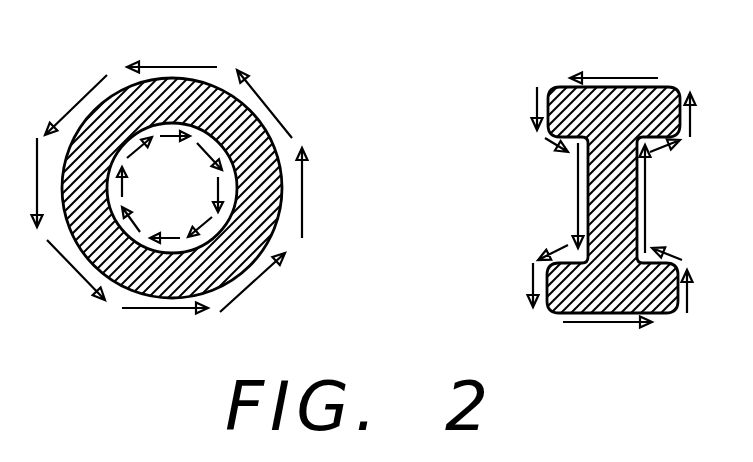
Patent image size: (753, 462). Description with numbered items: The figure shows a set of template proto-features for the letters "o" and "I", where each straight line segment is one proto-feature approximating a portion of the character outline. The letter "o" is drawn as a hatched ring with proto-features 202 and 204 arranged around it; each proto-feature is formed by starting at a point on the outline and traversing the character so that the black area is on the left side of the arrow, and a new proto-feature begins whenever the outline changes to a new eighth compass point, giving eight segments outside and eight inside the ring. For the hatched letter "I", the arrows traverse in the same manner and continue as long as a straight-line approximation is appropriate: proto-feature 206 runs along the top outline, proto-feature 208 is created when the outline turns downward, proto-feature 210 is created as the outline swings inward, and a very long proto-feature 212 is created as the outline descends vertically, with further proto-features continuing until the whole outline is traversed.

The proto-feature 202 is at (188, 65).
The proto-feature 204 is at (85, 93).
The proto-feature 206 is at (610, 75).
The proto-feature 208 is at (537, 97).
The proto-feature 210 is at (548, 146).
The proto-feature 212 is at (577, 194).